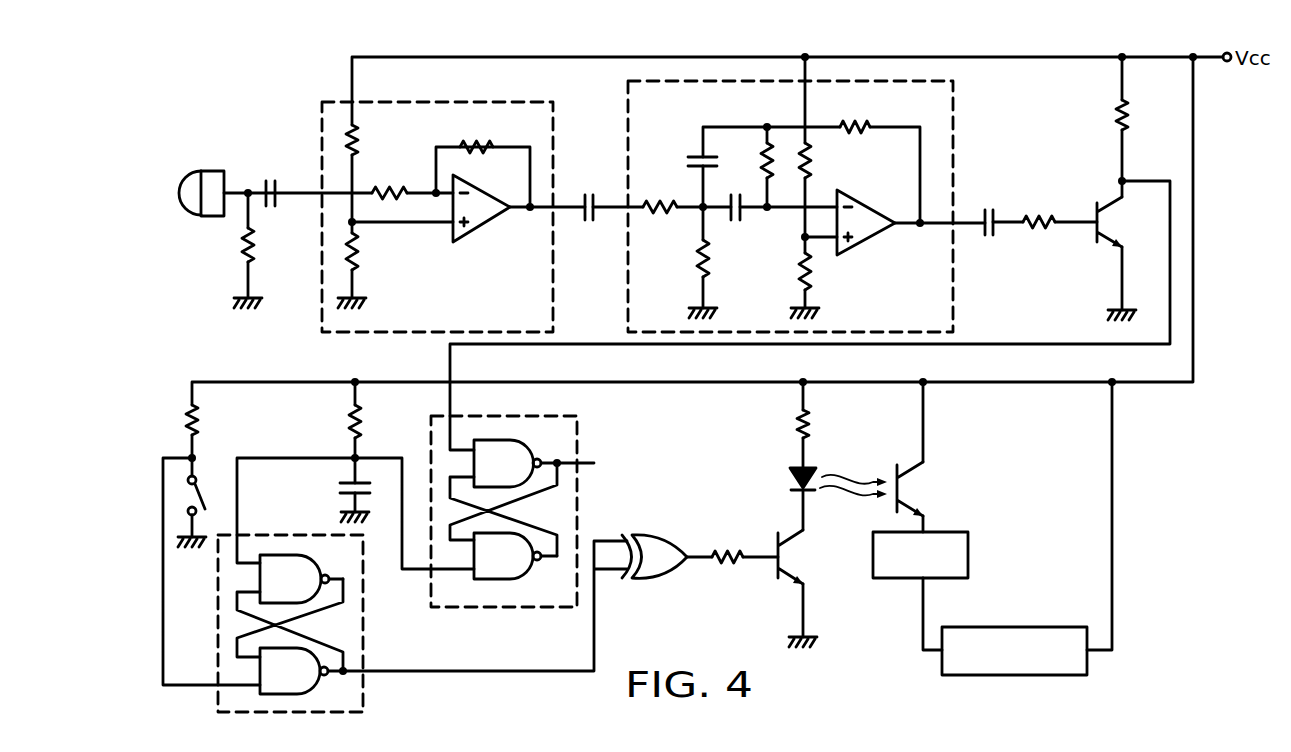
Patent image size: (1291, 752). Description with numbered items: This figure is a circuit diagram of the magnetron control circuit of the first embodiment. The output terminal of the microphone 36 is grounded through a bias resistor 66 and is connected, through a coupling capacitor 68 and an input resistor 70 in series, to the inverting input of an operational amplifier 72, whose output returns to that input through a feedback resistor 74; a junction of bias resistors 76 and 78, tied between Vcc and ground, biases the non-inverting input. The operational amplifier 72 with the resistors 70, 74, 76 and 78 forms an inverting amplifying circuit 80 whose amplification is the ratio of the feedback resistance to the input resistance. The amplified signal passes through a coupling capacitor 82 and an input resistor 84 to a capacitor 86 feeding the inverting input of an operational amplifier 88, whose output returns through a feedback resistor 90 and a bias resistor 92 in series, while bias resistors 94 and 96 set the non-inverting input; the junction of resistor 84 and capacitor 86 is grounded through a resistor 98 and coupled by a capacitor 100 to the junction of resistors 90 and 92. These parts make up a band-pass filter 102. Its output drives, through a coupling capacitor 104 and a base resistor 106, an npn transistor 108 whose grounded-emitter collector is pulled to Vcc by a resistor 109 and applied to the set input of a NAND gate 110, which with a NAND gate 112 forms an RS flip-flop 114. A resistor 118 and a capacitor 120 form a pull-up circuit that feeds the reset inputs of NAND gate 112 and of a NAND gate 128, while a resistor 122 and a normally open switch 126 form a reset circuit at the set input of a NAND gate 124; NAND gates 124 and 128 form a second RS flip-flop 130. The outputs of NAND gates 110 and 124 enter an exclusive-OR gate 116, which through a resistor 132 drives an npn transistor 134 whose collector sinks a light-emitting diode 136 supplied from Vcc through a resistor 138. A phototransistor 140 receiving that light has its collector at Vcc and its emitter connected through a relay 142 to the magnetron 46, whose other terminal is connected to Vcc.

The microphone 36 is at (213, 170).
The bias resistor 66 is at (254, 248).
The coupling capacitor 68 is at (276, 207).
The input resistor 70 is at (389, 189).
The operational amplifier 72 is at (483, 241).
The feedback resistor 74 is at (477, 144).
The bias resistor 76 is at (359, 136).
The bias resistor 78 is at (359, 254).
The inverting amplifying circuit 80 is at (483, 102).
The coupling capacitor 82 is at (589, 194).
The input resistor 84 is at (658, 210).
The capacitor 86 is at (745, 224).
The operational amplifier 88 is at (863, 243).
The feedback resistor 90 is at (855, 124).
The bias resistor 92 is at (766, 163).
The bias resistor 94 is at (810, 163).
The bias resistor 96 is at (810, 279).
The resistor 98 is at (708, 262).
The capacitor 100 is at (688, 163).
The band-pass filter 102 is at (955, 109).
The coupling capacitor 104 is at (989, 237).
The base resistor 106 is at (1043, 231).
The npn transistor 108 is at (1102, 205).
The resistor 109 is at (1128, 109).
The NAND gate 110 is at (516, 440).
The NAND gate 112 is at (516, 581).
The RS flip-flop 114 is at (522, 607).
The exclusive-OR gate 116 is at (661, 542).
The resistor 118 is at (360, 415).
The capacitor 120 is at (340, 488).
The resistor 122 is at (200, 421).
The NAND gate 124 is at (309, 694).
The switch 126 is at (213, 483).
The NAND gate 128 is at (308, 557).
The RS flip-flop 130 is at (365, 697).
The resistor 132 is at (727, 566).
The npn transistor 134 is at (790, 556).
The light-emitting diode 136 is at (790, 481).
The resistor 138 is at (796, 424).
The phototransistor 140 is at (922, 480).
The relay 142 is at (970, 557).
The magnetron 46 is at (1017, 627).